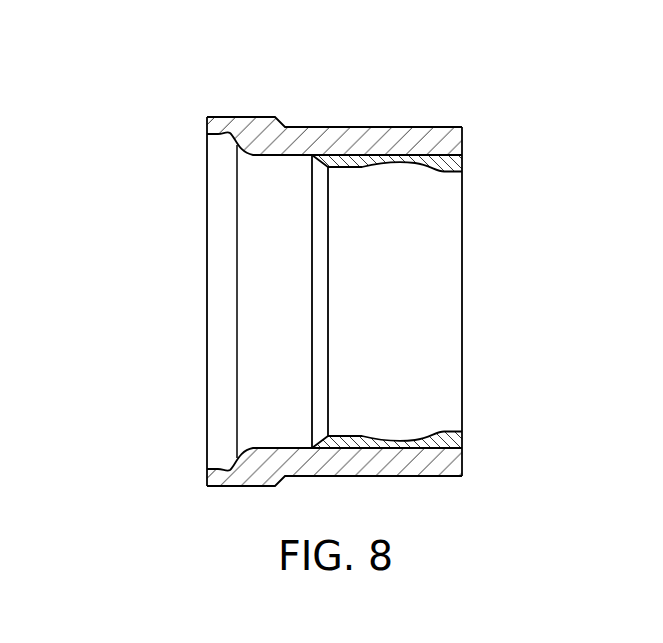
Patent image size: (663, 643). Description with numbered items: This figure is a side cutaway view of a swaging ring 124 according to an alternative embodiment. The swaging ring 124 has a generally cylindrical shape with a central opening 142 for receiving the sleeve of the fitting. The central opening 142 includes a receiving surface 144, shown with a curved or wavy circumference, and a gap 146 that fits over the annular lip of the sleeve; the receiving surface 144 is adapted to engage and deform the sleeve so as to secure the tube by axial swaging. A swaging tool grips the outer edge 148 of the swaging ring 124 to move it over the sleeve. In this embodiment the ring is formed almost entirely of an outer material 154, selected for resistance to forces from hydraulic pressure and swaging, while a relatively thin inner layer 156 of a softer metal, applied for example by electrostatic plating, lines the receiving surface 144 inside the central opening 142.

The swaging ring 124 is at (146, 99).
The central opening 142 is at (184, 300).
The receiving surface 144 is at (438, 170).
The gap 146 is at (222, 138).
The outer edge 148 is at (463, 140).
The outer material 154 is at (385, 127).
The inner layer 156 is at (363, 167).